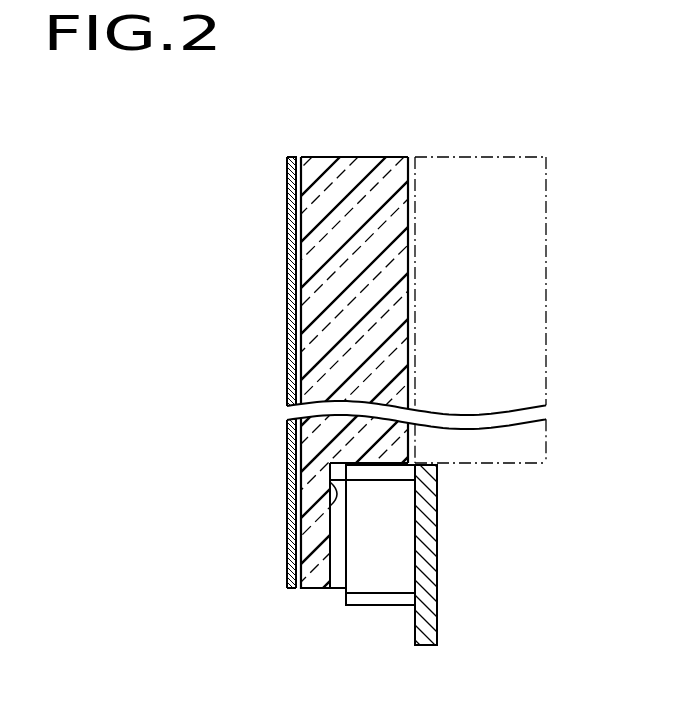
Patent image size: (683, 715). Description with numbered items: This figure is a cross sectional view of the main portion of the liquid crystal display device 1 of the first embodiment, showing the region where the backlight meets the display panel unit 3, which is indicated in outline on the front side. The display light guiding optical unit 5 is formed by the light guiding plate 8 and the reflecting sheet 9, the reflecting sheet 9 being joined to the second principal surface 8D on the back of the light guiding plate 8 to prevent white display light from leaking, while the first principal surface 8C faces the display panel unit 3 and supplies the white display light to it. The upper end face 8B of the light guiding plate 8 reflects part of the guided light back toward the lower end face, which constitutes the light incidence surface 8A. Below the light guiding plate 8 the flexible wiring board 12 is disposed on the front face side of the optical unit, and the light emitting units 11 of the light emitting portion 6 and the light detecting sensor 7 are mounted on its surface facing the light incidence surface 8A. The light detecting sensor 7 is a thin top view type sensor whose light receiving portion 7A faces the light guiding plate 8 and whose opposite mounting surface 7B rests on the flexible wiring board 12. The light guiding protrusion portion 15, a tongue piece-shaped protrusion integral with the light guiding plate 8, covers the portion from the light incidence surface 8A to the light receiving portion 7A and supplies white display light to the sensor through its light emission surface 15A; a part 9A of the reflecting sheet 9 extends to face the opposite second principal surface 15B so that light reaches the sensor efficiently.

The liquid crystal display device 1 is at (513, 128).
The display panel unit 3 is at (527, 217).
The display light guiding optical unit 5 is at (314, 151).
The light emitting portion 6 is at (330, 601).
The light detecting sensor 7 is at (400, 538).
The light receiving portion 7A is at (345, 560).
The mounting surface 7B is at (417, 580).
The light guiding plate 8 is at (328, 276).
The light incidence surface 8A is at (367, 466).
The upper end face 8B is at (352, 156).
The first principal surface 8C is at (410, 194).
The second principal surface 8D is at (300, 185).
The reflecting sheet 9 is at (288, 222).
The part of the reflecting sheet 9A is at (291, 580).
The light emitting unit 11 is at (375, 598).
The flexible wiring board 12 is at (422, 620).
The light guiding protrusion portion 15 is at (330, 532).
The light emission surface 15A is at (330, 486).
The second principal surface 15B is at (312, 507).